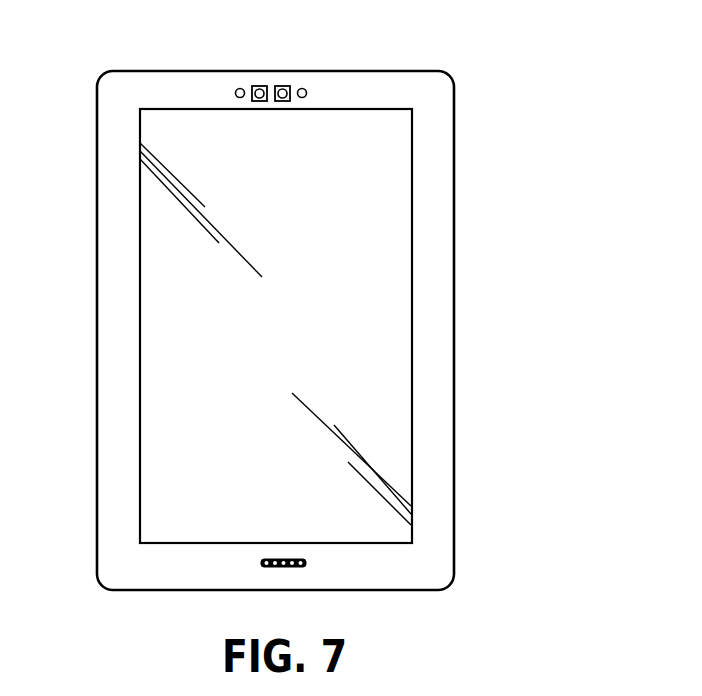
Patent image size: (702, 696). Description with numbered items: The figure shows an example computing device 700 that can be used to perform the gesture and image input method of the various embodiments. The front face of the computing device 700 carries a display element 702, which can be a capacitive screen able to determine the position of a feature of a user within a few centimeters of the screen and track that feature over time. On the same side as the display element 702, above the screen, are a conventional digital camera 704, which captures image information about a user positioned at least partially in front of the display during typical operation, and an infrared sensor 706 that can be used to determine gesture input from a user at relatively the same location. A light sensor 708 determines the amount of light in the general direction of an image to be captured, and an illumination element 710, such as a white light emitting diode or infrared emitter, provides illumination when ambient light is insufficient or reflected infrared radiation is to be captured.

The computing device 700 is at (603, 126).
The display element 702 is at (138, 122).
The digital camera 704 is at (256, 87).
The infrared (IR) sensor 706 is at (285, 87).
The light sensor 708 is at (306, 89).
The illumination element 710 is at (236, 91).